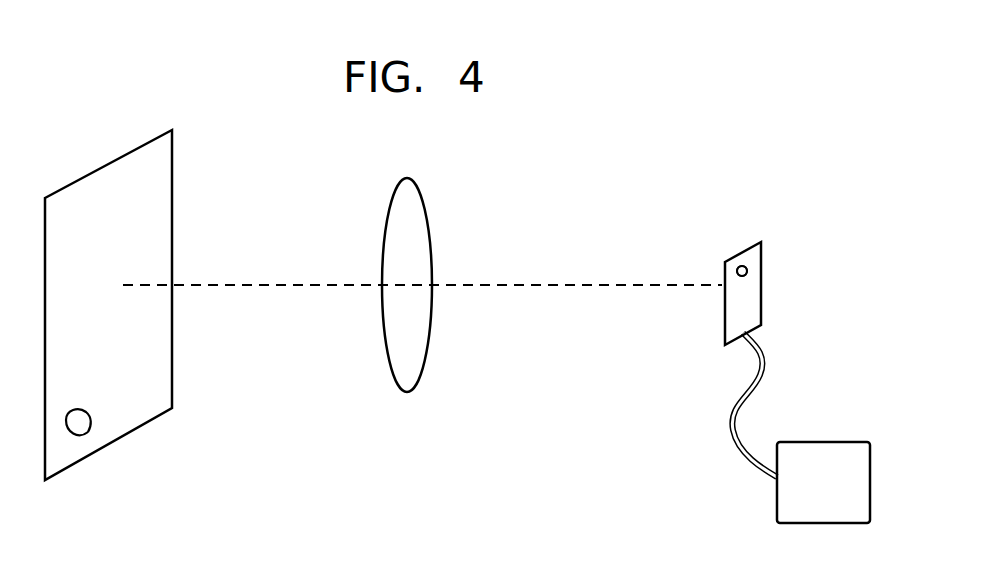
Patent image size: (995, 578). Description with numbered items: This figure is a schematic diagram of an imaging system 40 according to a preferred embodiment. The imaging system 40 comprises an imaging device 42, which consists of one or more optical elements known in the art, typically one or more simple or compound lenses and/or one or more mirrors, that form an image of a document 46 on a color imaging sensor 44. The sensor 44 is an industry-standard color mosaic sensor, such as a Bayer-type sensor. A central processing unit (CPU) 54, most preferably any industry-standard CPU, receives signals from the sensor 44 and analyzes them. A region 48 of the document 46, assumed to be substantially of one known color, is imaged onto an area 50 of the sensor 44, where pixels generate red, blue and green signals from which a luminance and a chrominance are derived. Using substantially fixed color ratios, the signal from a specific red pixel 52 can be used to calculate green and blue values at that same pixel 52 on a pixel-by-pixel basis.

The imaging system 40 is at (490, 425).
The imaging device 42 is at (410, 332).
The color imaging sensor 44 is at (762, 297).
The document 46 is at (88, 178).
The region 48 is at (90, 432).
The area 50 is at (740, 266).
The red pixel 52 is at (746, 269).
The central processing unit (CPU) 54 is at (820, 442).